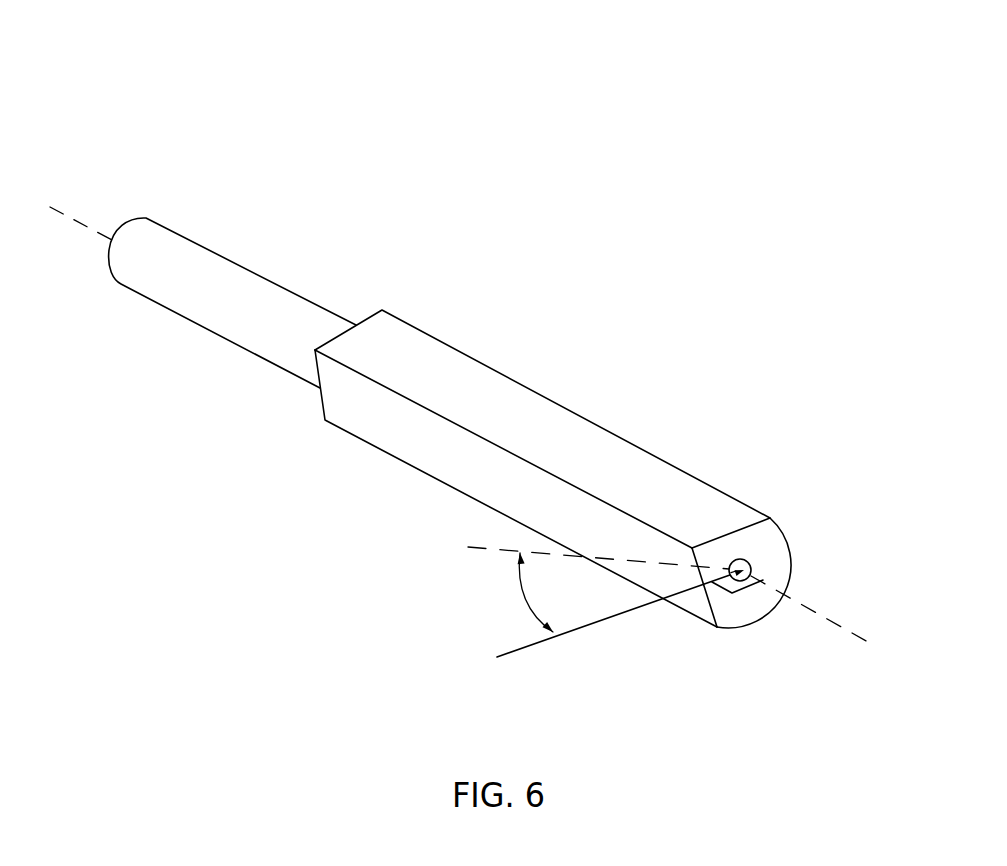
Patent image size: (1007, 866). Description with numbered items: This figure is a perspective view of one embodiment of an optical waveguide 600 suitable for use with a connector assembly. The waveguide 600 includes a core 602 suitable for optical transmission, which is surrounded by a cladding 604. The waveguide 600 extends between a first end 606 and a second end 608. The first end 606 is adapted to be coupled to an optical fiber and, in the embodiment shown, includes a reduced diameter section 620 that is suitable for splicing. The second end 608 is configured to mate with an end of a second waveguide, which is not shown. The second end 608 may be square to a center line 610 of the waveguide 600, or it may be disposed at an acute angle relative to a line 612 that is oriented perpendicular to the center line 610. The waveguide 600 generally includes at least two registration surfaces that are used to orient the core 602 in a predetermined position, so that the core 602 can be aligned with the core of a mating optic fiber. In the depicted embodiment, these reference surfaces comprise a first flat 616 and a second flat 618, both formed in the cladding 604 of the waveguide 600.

The waveguide 600 is at (455, 114).
The core 602 is at (732, 547).
The cladding 604 is at (776, 568).
The first end 606 is at (123, 227).
The second end 608 is at (768, 545).
The center line 610 is at (815, 615).
The line 612 is at (620, 613).
The first flat 616 is at (615, 458).
The second flat 618 is at (547, 513).
The reduced diameter section 620 is at (222, 292).